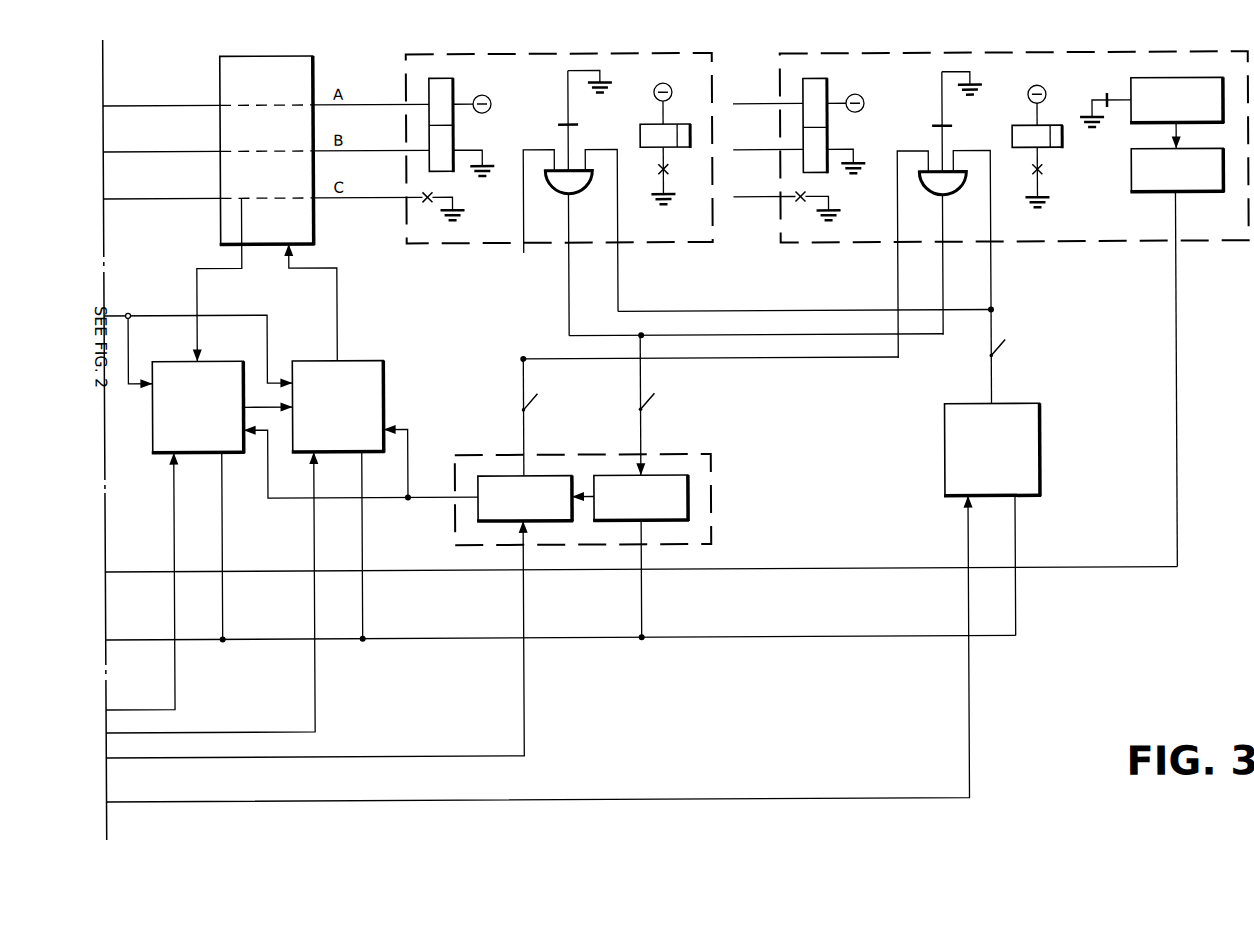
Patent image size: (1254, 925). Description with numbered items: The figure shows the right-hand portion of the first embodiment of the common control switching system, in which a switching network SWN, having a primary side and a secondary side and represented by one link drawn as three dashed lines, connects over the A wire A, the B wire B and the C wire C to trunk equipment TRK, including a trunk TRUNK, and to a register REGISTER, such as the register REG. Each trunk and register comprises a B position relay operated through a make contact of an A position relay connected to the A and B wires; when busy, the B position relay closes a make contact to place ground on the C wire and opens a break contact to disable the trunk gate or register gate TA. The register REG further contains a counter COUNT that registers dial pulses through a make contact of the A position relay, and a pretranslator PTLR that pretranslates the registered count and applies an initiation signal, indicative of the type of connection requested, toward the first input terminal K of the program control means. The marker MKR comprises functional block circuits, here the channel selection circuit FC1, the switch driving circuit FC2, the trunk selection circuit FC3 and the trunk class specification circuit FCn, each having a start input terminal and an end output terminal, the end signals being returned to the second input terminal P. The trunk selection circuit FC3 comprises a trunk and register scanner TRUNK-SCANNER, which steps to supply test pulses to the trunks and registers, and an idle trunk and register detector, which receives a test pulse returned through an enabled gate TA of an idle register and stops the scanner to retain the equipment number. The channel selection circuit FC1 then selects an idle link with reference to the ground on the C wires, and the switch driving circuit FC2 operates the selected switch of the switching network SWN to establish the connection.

The switching network SWN is at (265, 151).
The trunk equipment TRK is at (559, 148).
The trunk TRUNK is at (658, 129).
The trunk gate or register gate TA is at (570, 202).
The register REGISTER is at (991, 205).
The register REG is at (1029, 131).
The counter COUNT is at (1152, 103).
The pretranslator PTLR is at (1178, 344).
The channel selection circuit FC1 is at (198, 420).
The switch driving circuit FC2 is at (338, 420).
The trunk selection circuit FC3 is at (429, 583).
The trunk class specification circuit FCn is at (574, 602).
The marker MKR is at (809, 459).
The trunk and register scanner TRUNK-SCANNER is at (603, 437).
The A wire A is at (161, 96).
The B wire B is at (161, 142).
The C wire C is at (161, 189).
The first input terminal K is at (641, 559).
The second input terminal P is at (561, 627).